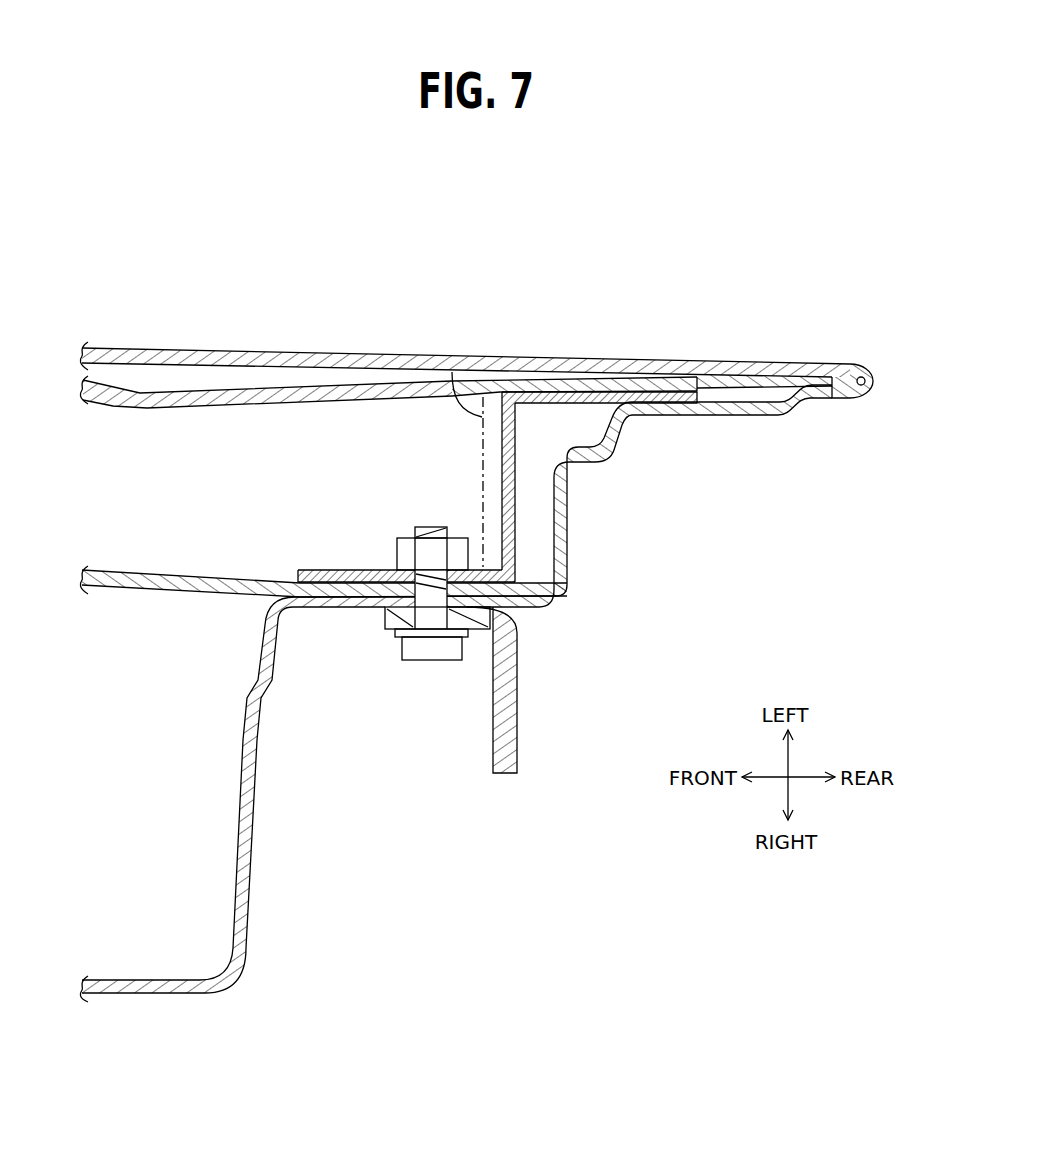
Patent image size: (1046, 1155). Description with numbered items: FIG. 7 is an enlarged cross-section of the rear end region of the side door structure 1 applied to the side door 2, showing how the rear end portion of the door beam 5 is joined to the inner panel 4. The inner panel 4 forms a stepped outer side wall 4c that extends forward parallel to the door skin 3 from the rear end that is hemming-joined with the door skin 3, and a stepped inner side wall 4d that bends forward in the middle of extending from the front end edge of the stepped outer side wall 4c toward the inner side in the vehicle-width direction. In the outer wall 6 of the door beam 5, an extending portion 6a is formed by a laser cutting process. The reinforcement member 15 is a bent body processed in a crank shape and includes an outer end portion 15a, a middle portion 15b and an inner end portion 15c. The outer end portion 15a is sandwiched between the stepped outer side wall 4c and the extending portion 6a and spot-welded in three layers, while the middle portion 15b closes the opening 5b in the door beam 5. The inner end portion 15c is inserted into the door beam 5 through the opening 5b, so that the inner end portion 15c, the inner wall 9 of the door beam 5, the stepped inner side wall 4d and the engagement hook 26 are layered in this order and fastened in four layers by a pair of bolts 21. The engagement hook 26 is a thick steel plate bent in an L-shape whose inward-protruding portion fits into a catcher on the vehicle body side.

The side door structure 1 is at (808, 332).
The side door 2 is at (876, 379).
The door skin 3 is at (186, 350).
The inner panel 4 is at (252, 843).
The stepped outer side wall 4c is at (765, 416).
The stepped inner side wall 4d is at (358, 608).
The door beam 5 is at (323, 610).
The inner wall 9 is at (160, 587).
The opening 5b is at (470, 356).
The outer wall 6 is at (217, 408).
The extending portion 6a is at (713, 378).
The reinforcement member 15 is at (468, 472).
The outer end portion 15a is at (583, 404).
The middle portion 15b is at (516, 487).
The inner end portion 15c is at (338, 569).
The bolt 21 is at (433, 650).
The engagement hook 26 is at (518, 700).